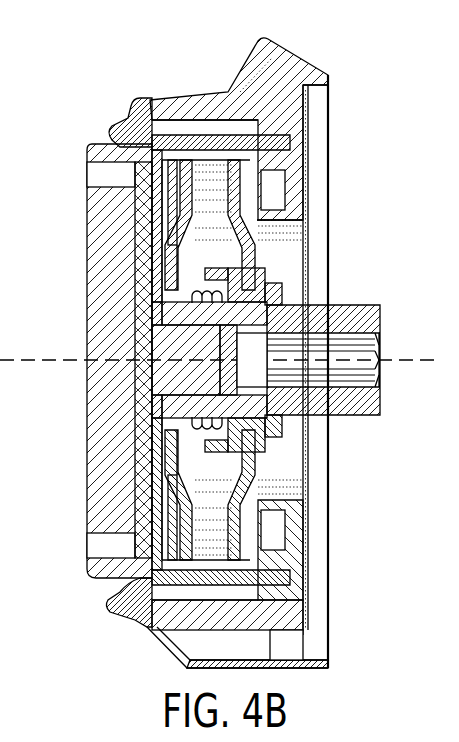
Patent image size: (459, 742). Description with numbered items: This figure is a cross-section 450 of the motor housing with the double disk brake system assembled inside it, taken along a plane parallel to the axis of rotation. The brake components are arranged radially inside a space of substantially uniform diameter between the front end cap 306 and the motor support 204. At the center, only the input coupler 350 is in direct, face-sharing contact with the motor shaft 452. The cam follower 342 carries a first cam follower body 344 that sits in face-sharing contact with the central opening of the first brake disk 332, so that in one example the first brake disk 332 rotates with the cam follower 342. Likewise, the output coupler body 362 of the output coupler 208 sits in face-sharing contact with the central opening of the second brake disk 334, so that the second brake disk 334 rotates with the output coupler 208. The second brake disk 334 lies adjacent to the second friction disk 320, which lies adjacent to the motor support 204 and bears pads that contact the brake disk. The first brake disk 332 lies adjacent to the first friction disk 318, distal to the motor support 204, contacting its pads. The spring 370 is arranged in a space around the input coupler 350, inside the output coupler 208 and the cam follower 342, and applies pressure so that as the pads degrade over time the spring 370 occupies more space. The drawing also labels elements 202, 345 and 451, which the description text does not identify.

The first housing portion 202 is at (87, 196).
The motor support 204 is at (237, 71).
The output coupler 208 is at (348, 306).
The front end cap 306 is at (132, 117).
The first friction disk 318 is at (157, 583).
The second friction disk 320 is at (253, 573).
The first brake disk 332 is at (172, 162).
The second brake disk 334 is at (240, 167).
The cam follower 342 is at (160, 297).
The first cam follower body 344 is at (160, 447).
The fourth bearing 345 is at (233, 455).
The input coupler 350 is at (177, 412).
The output coupler body 362 is at (242, 262).
The spring 370 is at (226, 421).
The cross-section 450 is at (339, 53).
The hub flange 451 is at (143, 317).
The motor shaft 452 is at (173, 372).